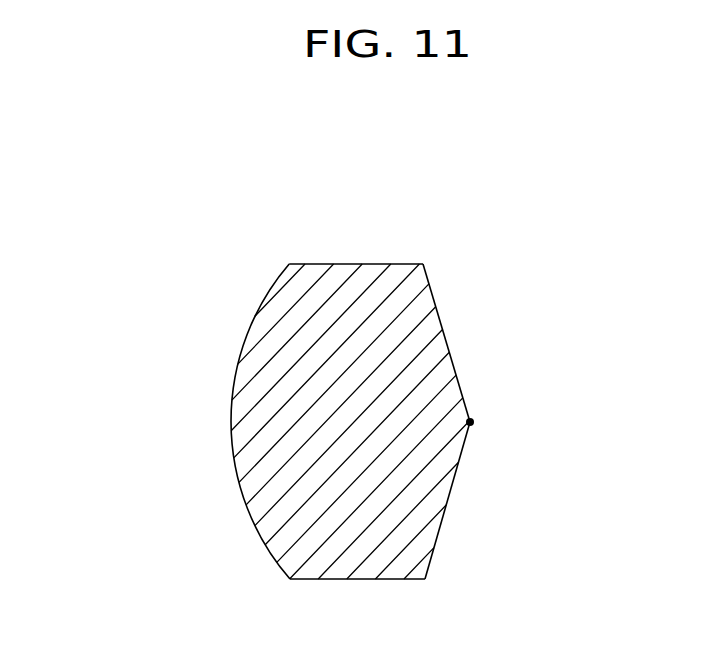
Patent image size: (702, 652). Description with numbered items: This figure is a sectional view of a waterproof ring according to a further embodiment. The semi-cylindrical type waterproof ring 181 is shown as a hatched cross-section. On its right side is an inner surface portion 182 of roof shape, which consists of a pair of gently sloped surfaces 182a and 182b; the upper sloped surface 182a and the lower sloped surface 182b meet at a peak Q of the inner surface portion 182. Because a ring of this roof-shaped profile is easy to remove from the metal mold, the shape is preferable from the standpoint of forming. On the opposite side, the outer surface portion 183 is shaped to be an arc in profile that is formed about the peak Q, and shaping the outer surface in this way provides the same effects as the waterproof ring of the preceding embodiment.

The waterproof ring 181 is at (398, 357).
The inner surface portion 182 is at (556, 421).
The gently sloped surface 182a is at (447, 342).
The gently sloped surface 182b is at (510, 500).
The outer surface portion 183 is at (232, 387).
The peak Q is at (470, 422).